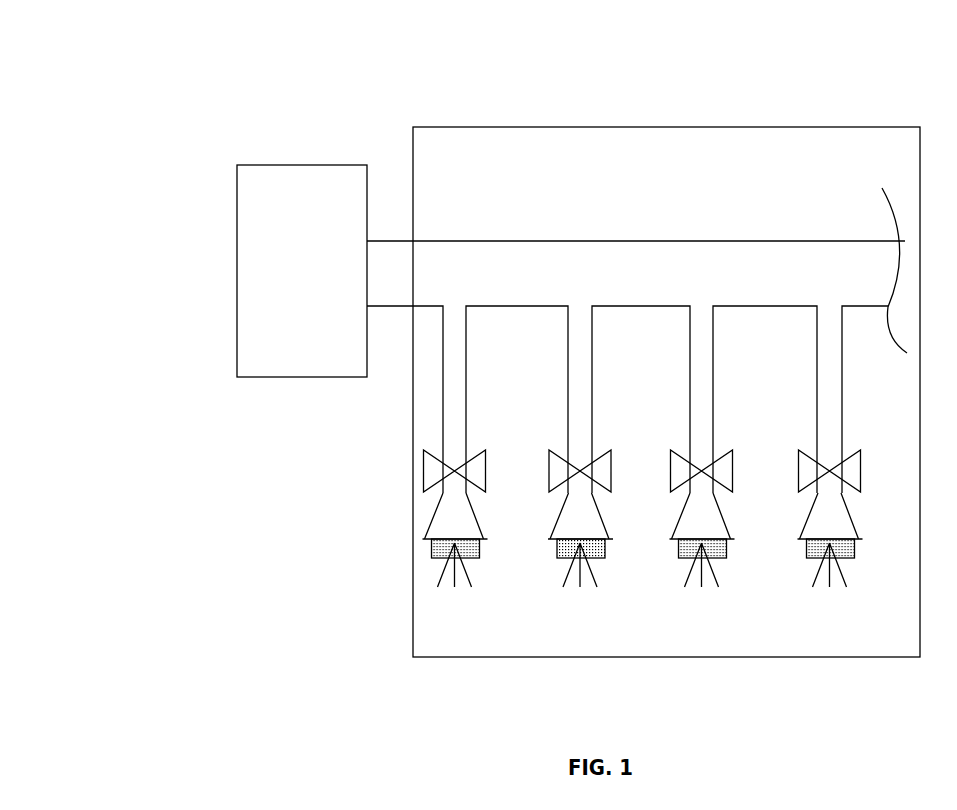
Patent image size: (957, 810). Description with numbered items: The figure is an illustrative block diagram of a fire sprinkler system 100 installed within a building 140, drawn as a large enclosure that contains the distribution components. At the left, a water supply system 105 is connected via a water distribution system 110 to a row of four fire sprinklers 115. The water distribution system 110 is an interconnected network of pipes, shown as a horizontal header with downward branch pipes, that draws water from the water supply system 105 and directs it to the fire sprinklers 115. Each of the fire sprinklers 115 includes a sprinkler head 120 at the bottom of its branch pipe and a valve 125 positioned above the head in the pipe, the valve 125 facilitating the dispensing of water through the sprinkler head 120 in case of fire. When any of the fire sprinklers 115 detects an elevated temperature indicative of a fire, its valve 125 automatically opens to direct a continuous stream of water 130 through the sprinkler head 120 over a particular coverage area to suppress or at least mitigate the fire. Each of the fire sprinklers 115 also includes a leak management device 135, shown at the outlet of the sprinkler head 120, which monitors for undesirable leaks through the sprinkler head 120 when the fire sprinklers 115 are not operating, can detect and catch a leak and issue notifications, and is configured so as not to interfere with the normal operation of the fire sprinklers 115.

The fire sprinkler system 100 is at (150, 88).
The water supply system 105 is at (322, 215).
The water distribution system 110 is at (658, 281).
The fire sprinkler 115 is at (555, 528).
The sprinkler head 120 is at (488, 539).
The valve 125 is at (549, 450).
The stream of water 130 is at (457, 588).
The leak management device 135 is at (450, 560).
The building 140 is at (470, 127).